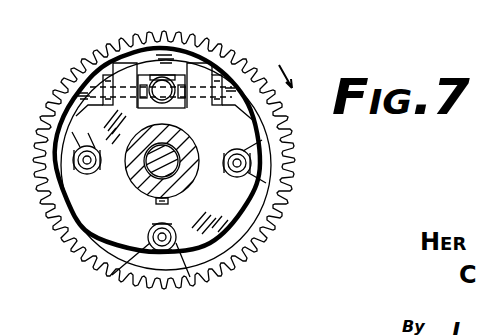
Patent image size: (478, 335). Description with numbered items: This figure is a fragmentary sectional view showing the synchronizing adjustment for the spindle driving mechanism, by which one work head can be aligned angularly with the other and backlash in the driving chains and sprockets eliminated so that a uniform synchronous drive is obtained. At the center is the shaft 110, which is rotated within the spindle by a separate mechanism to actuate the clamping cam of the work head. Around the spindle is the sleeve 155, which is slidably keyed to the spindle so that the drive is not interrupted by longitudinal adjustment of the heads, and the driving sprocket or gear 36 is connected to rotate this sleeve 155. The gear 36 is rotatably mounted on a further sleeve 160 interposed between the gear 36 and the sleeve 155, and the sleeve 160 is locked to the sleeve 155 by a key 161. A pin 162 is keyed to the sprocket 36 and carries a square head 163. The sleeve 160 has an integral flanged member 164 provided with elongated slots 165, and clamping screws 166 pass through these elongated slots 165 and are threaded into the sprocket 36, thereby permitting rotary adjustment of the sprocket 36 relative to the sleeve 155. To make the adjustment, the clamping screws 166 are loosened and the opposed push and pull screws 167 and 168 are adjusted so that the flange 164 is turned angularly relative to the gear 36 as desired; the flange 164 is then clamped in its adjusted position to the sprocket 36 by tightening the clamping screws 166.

The driving sprocket 36 is at (256, 238).
The shaft 110 is at (131, 170).
The sleeve 155 is at (182, 143).
The sleeve 160 is at (148, 195).
The key 161 is at (168, 202).
The pin 162 is at (153, 75).
The square head 163 is at (176, 75).
The flanged member 164 is at (262, 198).
The elongated slots 165 is at (70, 99).
The clamping screws 166 is at (292, 184).
The push and pull screw 167 is at (87, 146).
The push and pull screw 168 is at (232, 86).